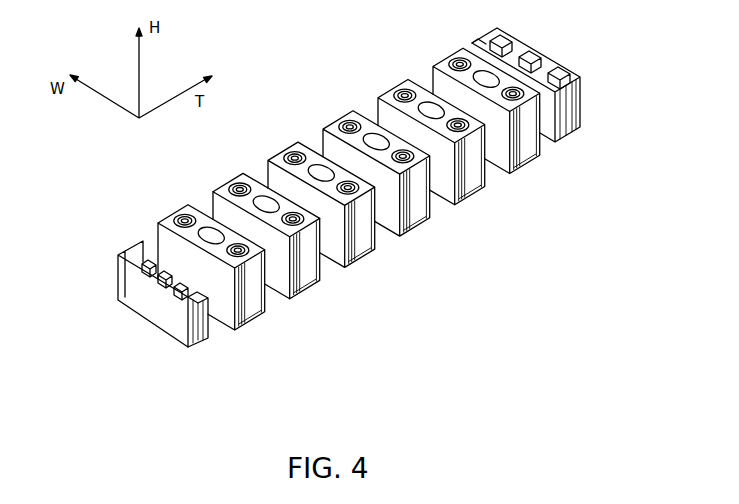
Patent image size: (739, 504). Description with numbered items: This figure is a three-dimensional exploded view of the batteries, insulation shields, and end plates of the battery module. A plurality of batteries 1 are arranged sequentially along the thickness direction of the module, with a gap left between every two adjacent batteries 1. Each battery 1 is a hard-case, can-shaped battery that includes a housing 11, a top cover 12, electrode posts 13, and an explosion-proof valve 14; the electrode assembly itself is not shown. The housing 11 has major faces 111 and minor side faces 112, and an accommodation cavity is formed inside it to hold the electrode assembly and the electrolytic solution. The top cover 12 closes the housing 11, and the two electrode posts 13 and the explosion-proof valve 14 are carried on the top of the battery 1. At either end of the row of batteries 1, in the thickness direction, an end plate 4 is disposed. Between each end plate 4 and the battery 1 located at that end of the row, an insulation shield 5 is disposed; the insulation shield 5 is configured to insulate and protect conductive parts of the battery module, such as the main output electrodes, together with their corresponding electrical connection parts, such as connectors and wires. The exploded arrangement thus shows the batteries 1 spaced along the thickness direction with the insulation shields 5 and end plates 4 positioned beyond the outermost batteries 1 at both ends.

The battery 1 is at (223, 171).
The housing 11 is at (322, 288).
The major face 111 is at (278, 287).
The minor side face 112 is at (305, 277).
The top cover 12 is at (249, 178).
The electrode post 13 is at (249, 181).
The explosion-proof valve 14 is at (270, 200).
The end plate 4 is at (137, 319).
The insulation shield 5 is at (140, 227).